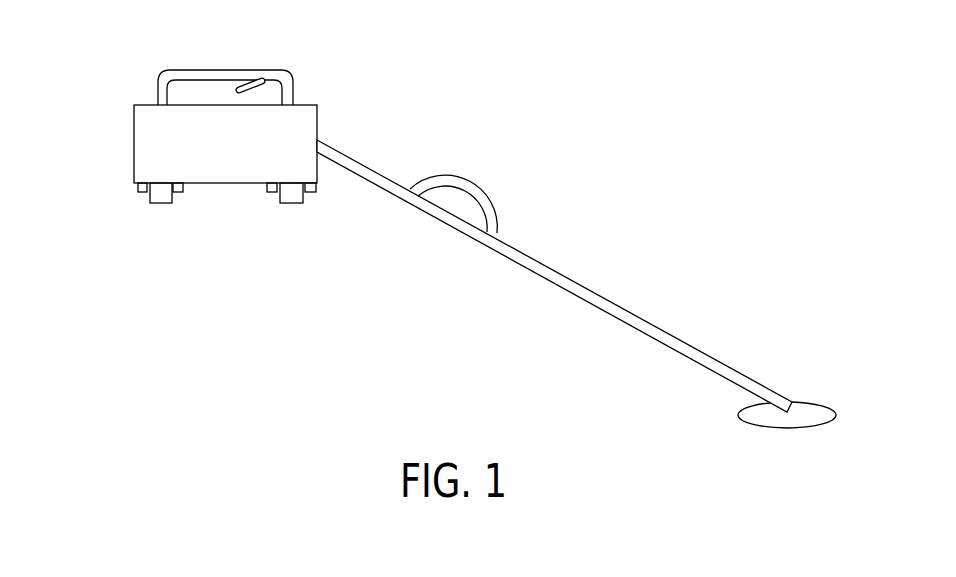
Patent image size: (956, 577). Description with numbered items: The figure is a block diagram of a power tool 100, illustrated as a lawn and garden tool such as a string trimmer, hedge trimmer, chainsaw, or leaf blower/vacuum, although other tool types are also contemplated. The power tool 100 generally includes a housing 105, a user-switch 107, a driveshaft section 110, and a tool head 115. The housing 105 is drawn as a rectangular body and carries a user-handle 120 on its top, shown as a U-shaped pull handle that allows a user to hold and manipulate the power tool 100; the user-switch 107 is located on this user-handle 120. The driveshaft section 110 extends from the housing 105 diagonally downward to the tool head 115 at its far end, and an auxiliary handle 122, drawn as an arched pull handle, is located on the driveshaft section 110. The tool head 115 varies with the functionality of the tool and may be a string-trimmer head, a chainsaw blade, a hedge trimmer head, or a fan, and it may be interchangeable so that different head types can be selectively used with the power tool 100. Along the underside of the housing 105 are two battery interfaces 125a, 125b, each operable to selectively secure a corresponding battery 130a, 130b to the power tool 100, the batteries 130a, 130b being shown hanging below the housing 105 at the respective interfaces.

The power tool 100 is at (603, 93).
The housing 105 is at (244, 158).
The user-switch 107 is at (242, 86).
The driveshaft section 110 is at (615, 303).
The tool head 115 is at (815, 412).
The user-handle 120 is at (186, 69).
The auxiliary handle 122 is at (470, 182).
The battery interface 125a is at (138, 187).
The battery interface 125b is at (316, 189).
The battery 130a is at (160, 204).
The battery 130b is at (291, 204).